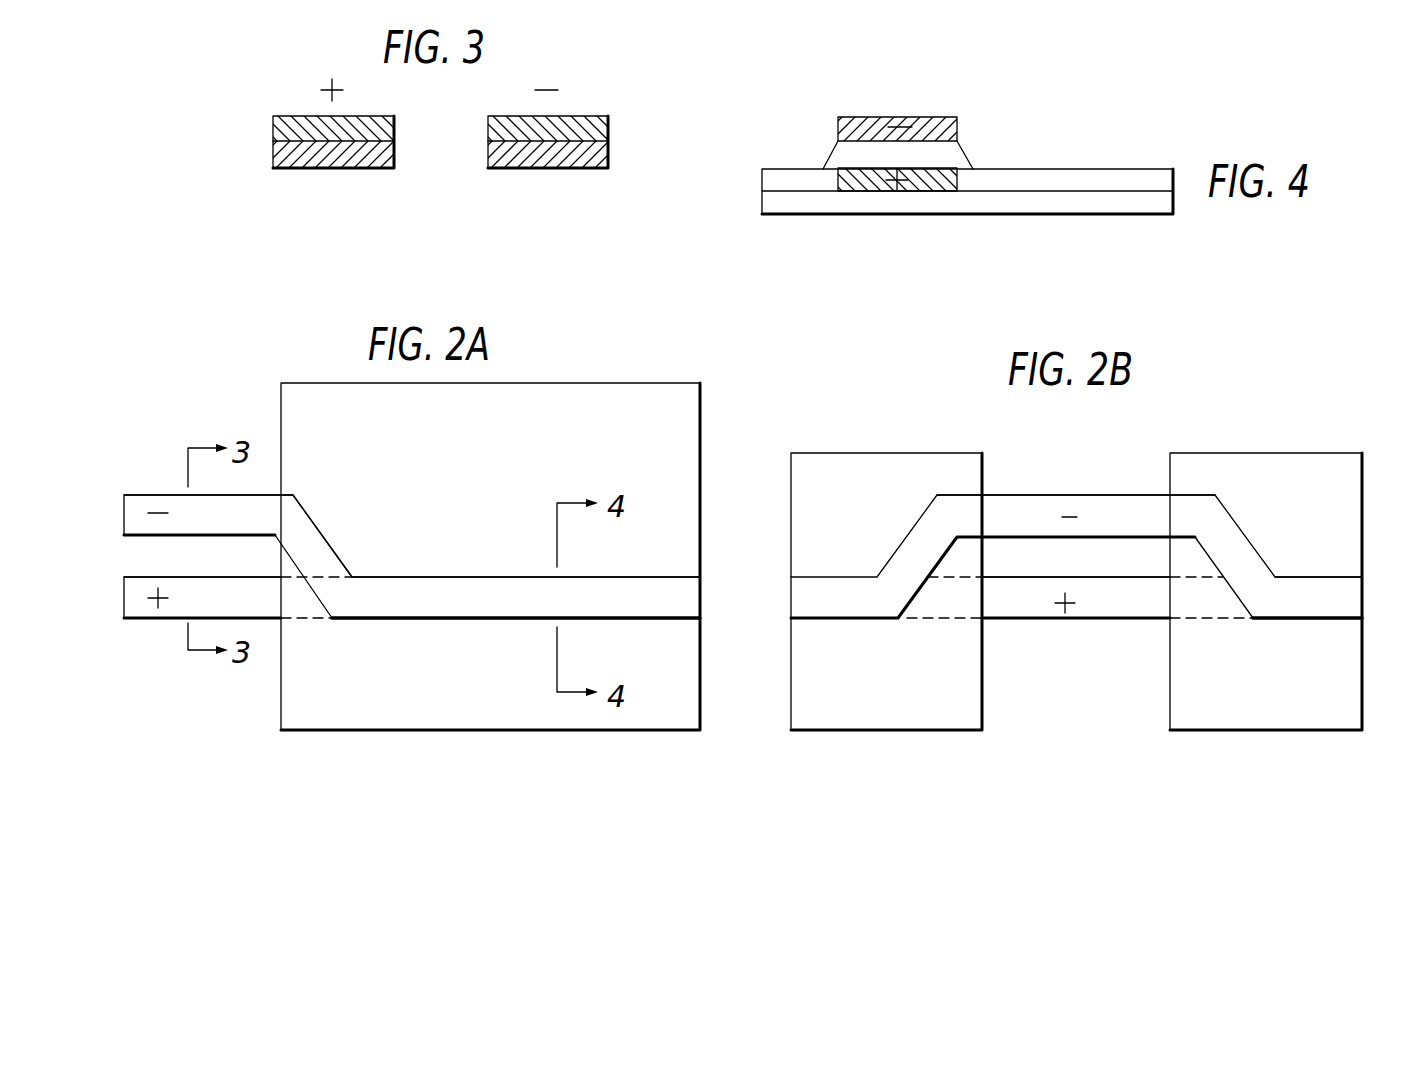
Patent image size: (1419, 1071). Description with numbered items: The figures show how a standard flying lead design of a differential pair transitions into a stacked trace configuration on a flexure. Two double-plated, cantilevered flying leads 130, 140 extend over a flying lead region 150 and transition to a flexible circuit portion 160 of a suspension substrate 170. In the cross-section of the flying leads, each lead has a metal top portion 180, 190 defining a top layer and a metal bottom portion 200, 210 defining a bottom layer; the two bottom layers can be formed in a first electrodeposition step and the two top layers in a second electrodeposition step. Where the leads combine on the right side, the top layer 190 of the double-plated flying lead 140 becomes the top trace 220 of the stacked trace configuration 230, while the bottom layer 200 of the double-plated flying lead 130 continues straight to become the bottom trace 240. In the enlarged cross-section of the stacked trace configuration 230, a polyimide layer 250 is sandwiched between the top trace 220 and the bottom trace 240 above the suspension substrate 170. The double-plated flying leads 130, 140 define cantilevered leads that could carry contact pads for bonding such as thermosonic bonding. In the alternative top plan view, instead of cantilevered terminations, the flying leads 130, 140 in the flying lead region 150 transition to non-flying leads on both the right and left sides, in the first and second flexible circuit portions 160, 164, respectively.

In FIG. 3, the double-plated flying lead 130 is at (287, 180).
In FIG. 2A, the double-plated flying lead 130 is at (138, 620).
In FIG. 2B, the double-plated flying lead 130 is at (990, 620).
In FIG. 3, the double-plated flying lead 140 is at (583, 180).
In FIG. 2A, the double-plated flying lead 140 is at (172, 493).
In FIG. 2B, the double-plated flying lead 140 is at (990, 493).
In FIG. 2A, the flying lead region 150 is at (275, 755).
In FIG. 2B, the flying lead region 150 is at (1170, 755).
In FIG. 2A, the flexible circuit portion 160 is at (695, 755).
In FIG. 2B, the flexible circuit portion 160 is at (1360, 755).
In FIG. 2B, the second flexible circuit portion 164 is at (982, 755).
In FIG. 4, the suspension substrate 170 is at (1117, 205).
In FIG. 3, the metal top portion 180 is at (365, 122).
In FIG. 3, the metal top portion 190 is at (578, 123).
In FIG. 2A, the metal top portion 190 is at (237, 505).
In FIG. 2B, the metal top portion 190 is at (1028, 500).
In FIG. 3, the metal bottom portion 200 is at (305, 160).
In FIG. 2A, the metal bottom portion 200 is at (172, 620).
In FIG. 2B, the metal bottom portion 200 is at (1047, 607).
In FIG. 3, the metal bottom portion 210 is at (598, 153).
In FIG. 4, the top trace 220 is at (922, 116).
In FIG. 2A, the top trace 220 is at (675, 590).
In FIG. 2B, the top trace 220 is at (1316, 607).
In FIG. 4, the stacked trace configuration 230 is at (1070, 101).
In FIG. 4, the bottom trace 240 is at (837, 177).
In FIG. 4, the polyimide layer 250 is at (1080, 168).